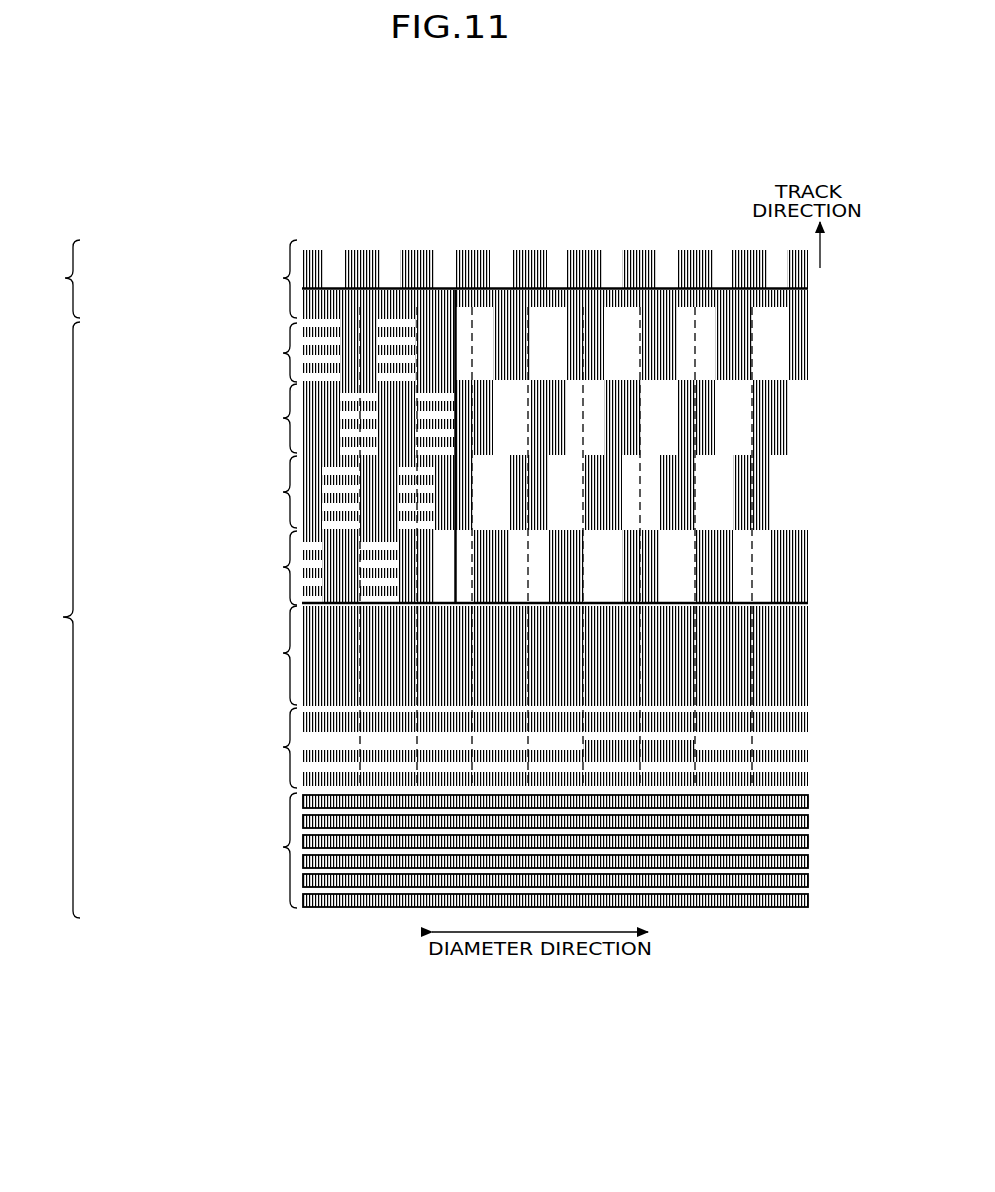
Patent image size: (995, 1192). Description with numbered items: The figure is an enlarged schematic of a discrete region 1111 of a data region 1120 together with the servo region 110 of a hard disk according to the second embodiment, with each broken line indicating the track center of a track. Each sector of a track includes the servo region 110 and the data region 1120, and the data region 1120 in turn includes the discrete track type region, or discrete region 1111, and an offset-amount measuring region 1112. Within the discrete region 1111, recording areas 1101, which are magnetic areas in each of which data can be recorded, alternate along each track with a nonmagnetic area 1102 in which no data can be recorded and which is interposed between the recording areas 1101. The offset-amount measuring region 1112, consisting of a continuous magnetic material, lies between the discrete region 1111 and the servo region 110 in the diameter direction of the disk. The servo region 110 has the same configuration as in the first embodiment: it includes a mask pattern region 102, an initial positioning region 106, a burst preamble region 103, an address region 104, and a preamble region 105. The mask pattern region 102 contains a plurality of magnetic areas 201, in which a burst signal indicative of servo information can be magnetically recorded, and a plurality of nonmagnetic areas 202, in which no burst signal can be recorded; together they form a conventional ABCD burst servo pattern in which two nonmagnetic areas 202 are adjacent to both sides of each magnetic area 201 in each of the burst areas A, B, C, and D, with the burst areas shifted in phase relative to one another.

The data region 1120 is at (65, 278).
The discrete region 1111 is at (285, 266).
The offset-amount measuring region 1112 is at (445, 205).
The initial positioning region 106 is at (427, 286).
The mask pattern region 102 is at (588, 354).
The nonmagnetic area 1102 is at (498, 262).
The recording area 1101 is at (517, 262).
The magnetic area 201 is at (737, 352).
The nonmagnetic area 202 is at (737, 406).
The burst preamble region 103 is at (482, 656).
The address region 104 is at (488, 748).
The preamble region 105 is at (482, 850).
The servo region 110 is at (63, 617).